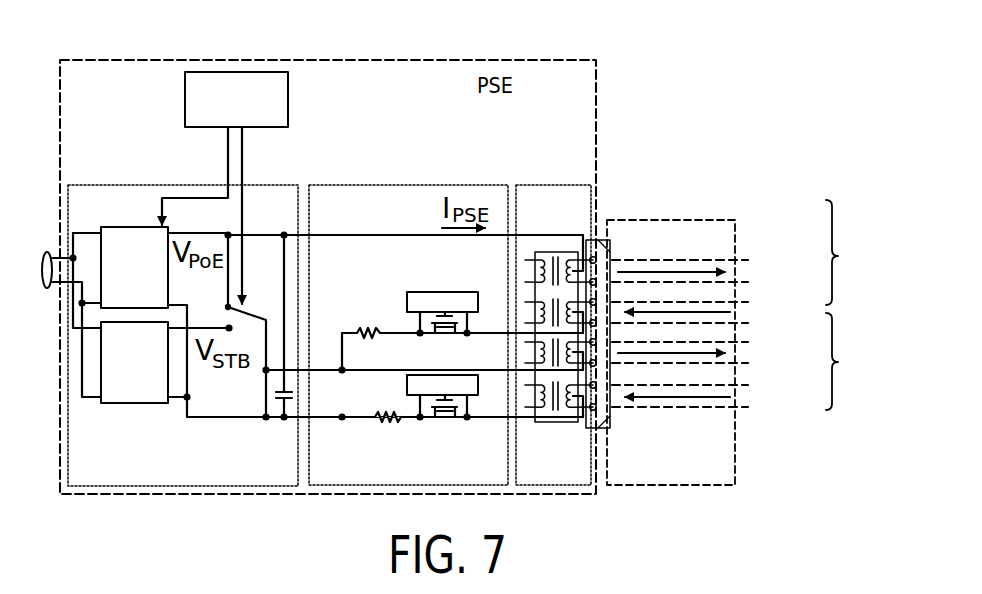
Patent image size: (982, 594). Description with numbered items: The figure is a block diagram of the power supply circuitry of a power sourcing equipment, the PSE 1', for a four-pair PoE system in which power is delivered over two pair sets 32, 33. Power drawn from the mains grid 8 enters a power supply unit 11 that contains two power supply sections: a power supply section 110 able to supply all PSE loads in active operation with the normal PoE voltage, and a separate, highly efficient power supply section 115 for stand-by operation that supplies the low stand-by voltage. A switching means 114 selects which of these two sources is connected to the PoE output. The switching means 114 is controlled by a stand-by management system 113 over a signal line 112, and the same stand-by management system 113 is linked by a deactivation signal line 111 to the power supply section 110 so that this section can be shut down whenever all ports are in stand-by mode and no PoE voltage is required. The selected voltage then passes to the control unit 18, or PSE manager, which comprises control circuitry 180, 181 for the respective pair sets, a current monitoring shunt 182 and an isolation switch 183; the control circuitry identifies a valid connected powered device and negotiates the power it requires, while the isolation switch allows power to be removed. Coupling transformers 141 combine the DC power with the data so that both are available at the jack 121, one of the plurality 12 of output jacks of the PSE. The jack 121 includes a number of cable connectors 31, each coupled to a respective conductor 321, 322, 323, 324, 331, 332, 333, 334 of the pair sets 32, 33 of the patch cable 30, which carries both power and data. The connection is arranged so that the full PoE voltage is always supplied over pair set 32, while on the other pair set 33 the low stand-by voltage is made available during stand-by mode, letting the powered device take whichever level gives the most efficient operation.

The PSE 1' is at (318, 248).
The mains grid 8 is at (47, 293).
The power supply unit 11 is at (107, 182).
The power supply section 110 is at (128, 224).
The deactivation signal line 111 is at (226, 150).
The signal line 112 is at (247, 157).
The stand-by management system 113 is at (183, 98).
The switching means 114 is at (252, 303).
The power supply section 115 is at (135, 408).
The plurality of output jacks 12 is at (534, 182).
The jack 121 is at (585, 230).
The coupling transformers 141 is at (562, 426).
The control unit 18 is at (375, 182).
The control circuitry 180 is at (419, 299).
The control circuitry 181 is at (471, 388).
The current monitoring shunt 182 is at (391, 427).
The isolation switch 183 is at (445, 422).
The patch cable 30 is at (680, 215).
The cable connectors 31 is at (613, 241).
The pair set 32 is at (844, 252).
The conductor 321 is at (751, 257).
The conductor 322 is at (753, 279).
The conductor 323 is at (753, 299).
The conductor 324 is at (753, 320).
The pair set 33 is at (844, 361).
The conductor 331 is at (753, 340).
The conductor 332 is at (753, 361).
The conductor 333 is at (753, 383).
The conductor 334 is at (753, 405).